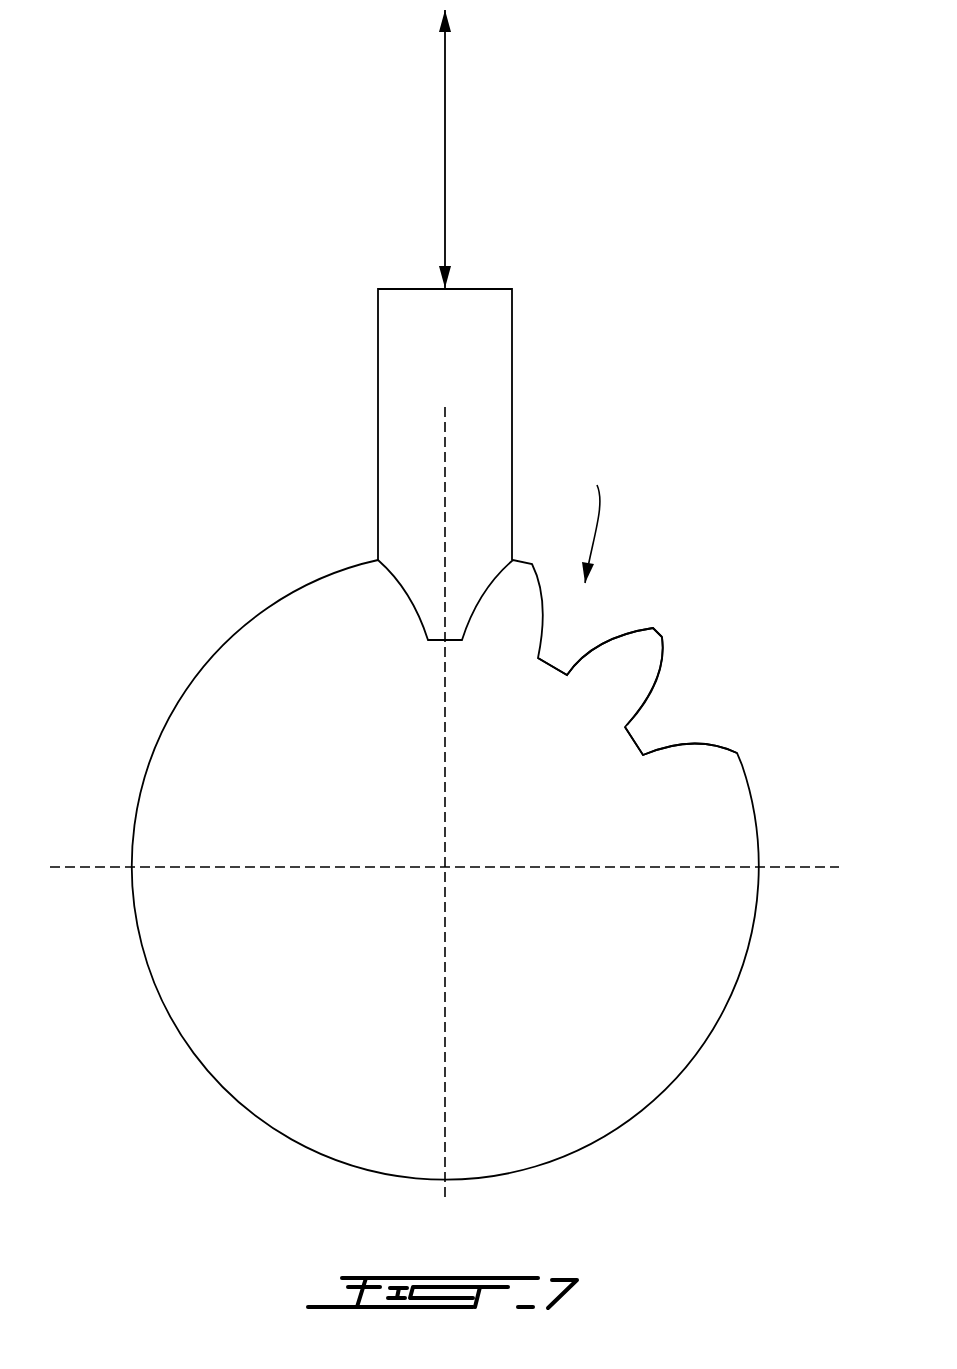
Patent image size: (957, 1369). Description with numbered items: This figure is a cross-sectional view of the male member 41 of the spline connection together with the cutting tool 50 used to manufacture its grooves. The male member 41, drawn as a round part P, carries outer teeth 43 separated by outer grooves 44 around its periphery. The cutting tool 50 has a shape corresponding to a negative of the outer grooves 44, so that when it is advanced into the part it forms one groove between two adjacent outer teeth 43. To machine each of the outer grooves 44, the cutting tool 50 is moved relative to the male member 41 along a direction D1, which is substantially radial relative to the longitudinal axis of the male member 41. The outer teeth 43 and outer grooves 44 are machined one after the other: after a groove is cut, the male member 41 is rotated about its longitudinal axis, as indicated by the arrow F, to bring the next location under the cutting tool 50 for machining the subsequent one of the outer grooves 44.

The cutting tool 50 is at (490, 406).
The part P is at (554, 983).
The direction D1 is at (445, 128).
The rotation/feed direction of part F is at (594, 517).
The outer teeth 43 is at (657, 630).
The outer grooves 44 is at (640, 740).
The male member 41 is at (742, 676).